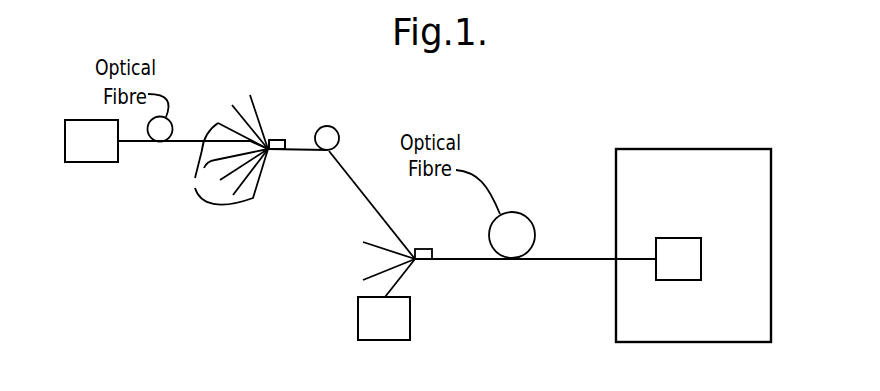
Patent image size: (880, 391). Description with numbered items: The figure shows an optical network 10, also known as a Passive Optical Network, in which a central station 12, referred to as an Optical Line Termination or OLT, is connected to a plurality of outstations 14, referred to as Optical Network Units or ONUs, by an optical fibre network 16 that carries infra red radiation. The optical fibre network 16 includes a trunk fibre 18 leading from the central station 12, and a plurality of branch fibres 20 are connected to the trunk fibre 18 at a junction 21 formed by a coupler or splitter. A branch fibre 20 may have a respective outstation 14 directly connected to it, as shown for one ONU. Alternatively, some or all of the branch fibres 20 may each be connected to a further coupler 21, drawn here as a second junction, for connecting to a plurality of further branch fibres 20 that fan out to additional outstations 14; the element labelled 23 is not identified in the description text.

The optical network 10 is at (667, 235).
The central station 12 is at (679, 237).
The outstation 14 is at (92, 162).
The optical fibre network 16 is at (310, 288).
The trunk fibre 18 is at (583, 260).
The branch fibre 20 is at (180, 141).
The junction 21 is at (273, 140).
The optical splitter 23 is at (277, 150).